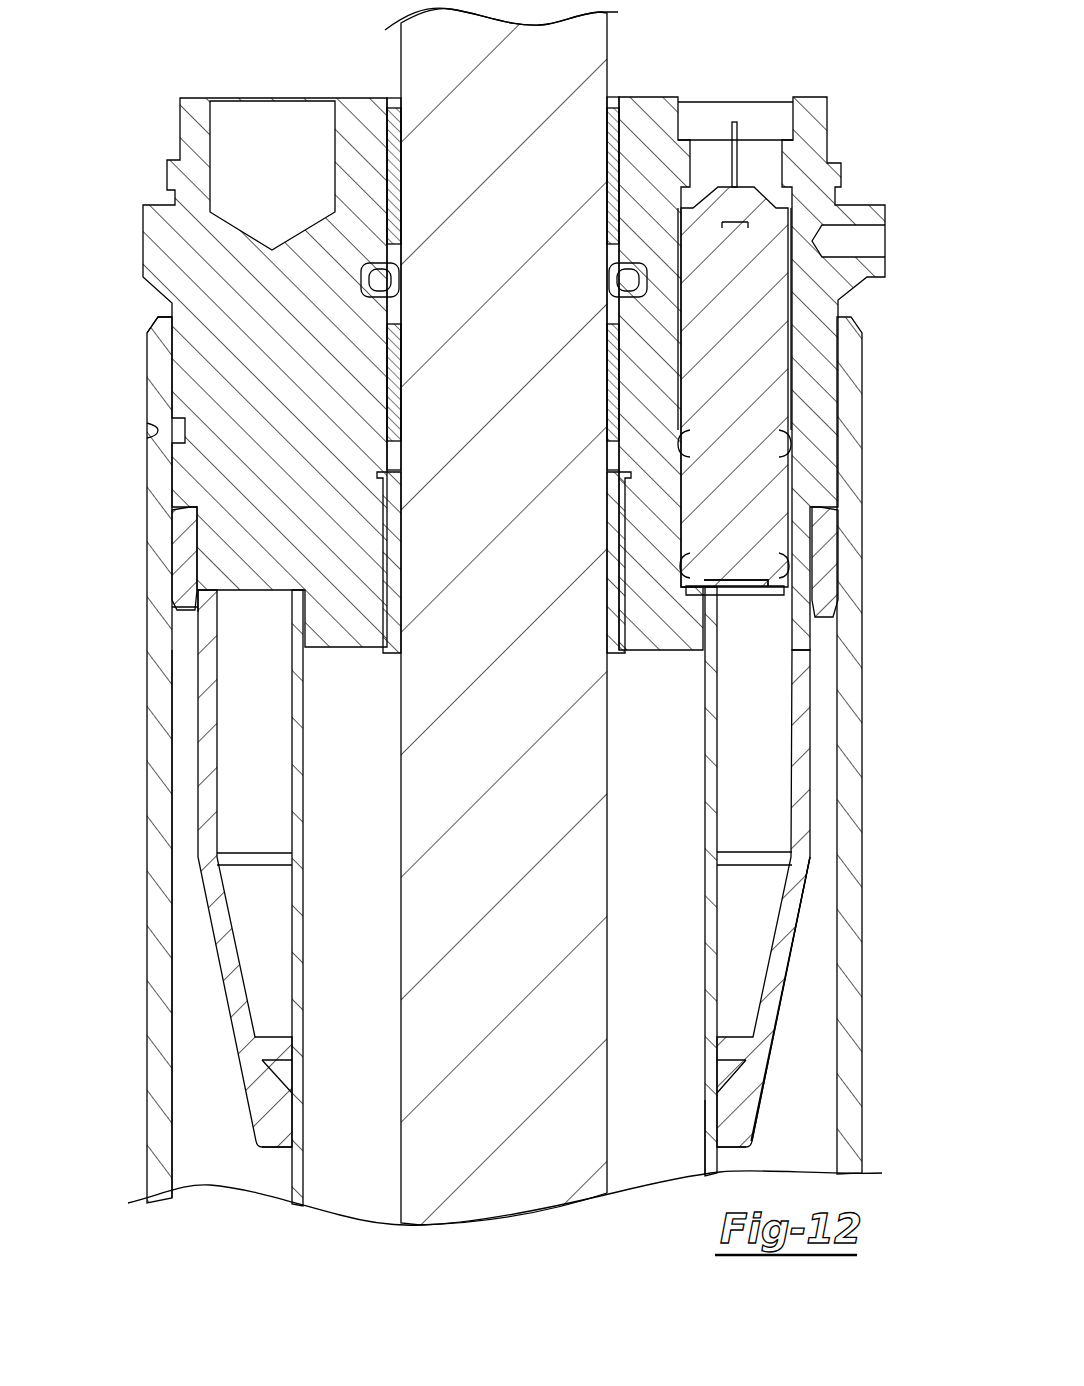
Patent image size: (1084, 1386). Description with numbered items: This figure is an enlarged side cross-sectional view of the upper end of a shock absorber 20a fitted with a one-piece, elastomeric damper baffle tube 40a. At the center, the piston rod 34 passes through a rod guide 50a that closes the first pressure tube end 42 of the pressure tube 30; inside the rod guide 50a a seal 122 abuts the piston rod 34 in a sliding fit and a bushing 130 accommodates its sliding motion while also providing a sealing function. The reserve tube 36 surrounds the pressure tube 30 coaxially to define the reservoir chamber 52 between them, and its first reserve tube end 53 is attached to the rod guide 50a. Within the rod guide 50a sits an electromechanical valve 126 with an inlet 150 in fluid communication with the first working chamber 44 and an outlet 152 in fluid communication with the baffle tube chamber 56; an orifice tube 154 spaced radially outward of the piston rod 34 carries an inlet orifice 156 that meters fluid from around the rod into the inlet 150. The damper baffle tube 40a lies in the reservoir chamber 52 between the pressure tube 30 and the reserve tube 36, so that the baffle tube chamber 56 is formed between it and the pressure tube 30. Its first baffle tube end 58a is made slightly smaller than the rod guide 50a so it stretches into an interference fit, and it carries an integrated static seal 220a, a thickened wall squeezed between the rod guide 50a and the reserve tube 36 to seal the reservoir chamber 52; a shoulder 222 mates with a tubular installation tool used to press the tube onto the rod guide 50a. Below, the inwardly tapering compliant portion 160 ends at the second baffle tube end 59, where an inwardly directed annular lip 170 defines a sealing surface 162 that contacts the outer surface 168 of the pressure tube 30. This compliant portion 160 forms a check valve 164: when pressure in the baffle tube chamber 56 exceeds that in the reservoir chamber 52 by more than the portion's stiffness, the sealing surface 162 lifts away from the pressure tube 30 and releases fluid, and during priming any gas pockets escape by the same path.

The shock absorber 20a is at (125, 82).
The piston rod 34 is at (568, 58).
The seal 122 is at (375, 270).
The rod guide 50a is at (222, 290).
The electromechanical valve 126 is at (760, 325).
The first reserve tube end 53 is at (160, 335).
The bushing 130 is at (395, 390).
The first baffle tube end 58a is at (187, 533).
The inlet orifice 156 is at (628, 520).
The integrated static seal 220a is at (830, 540).
The orifice tube 154 is at (385, 600).
The shoulder 222 is at (190, 616).
The outlet 152 is at (740, 625).
The first pressure tube end 42 is at (300, 603).
The inlet 150 is at (672, 523).
The damper baffle tube 40a is at (212, 798).
The baffle tube chamber 56 is at (768, 806).
The reserve tube 36 is at (165, 966).
The pressure tube 30 is at (297, 942).
The compliant portion 160 is at (775, 948).
The sealing surface 162 is at (292, 1090).
The annular lip 170 is at (737, 1100).
The check valve 164 is at (775, 1092).
The reservoir chamber 52 is at (212, 1118).
The second baffle tube end 59 is at (745, 1134).
The outer surface 168 is at (288, 1178).
The first working chamber 44 is at (662, 1148).